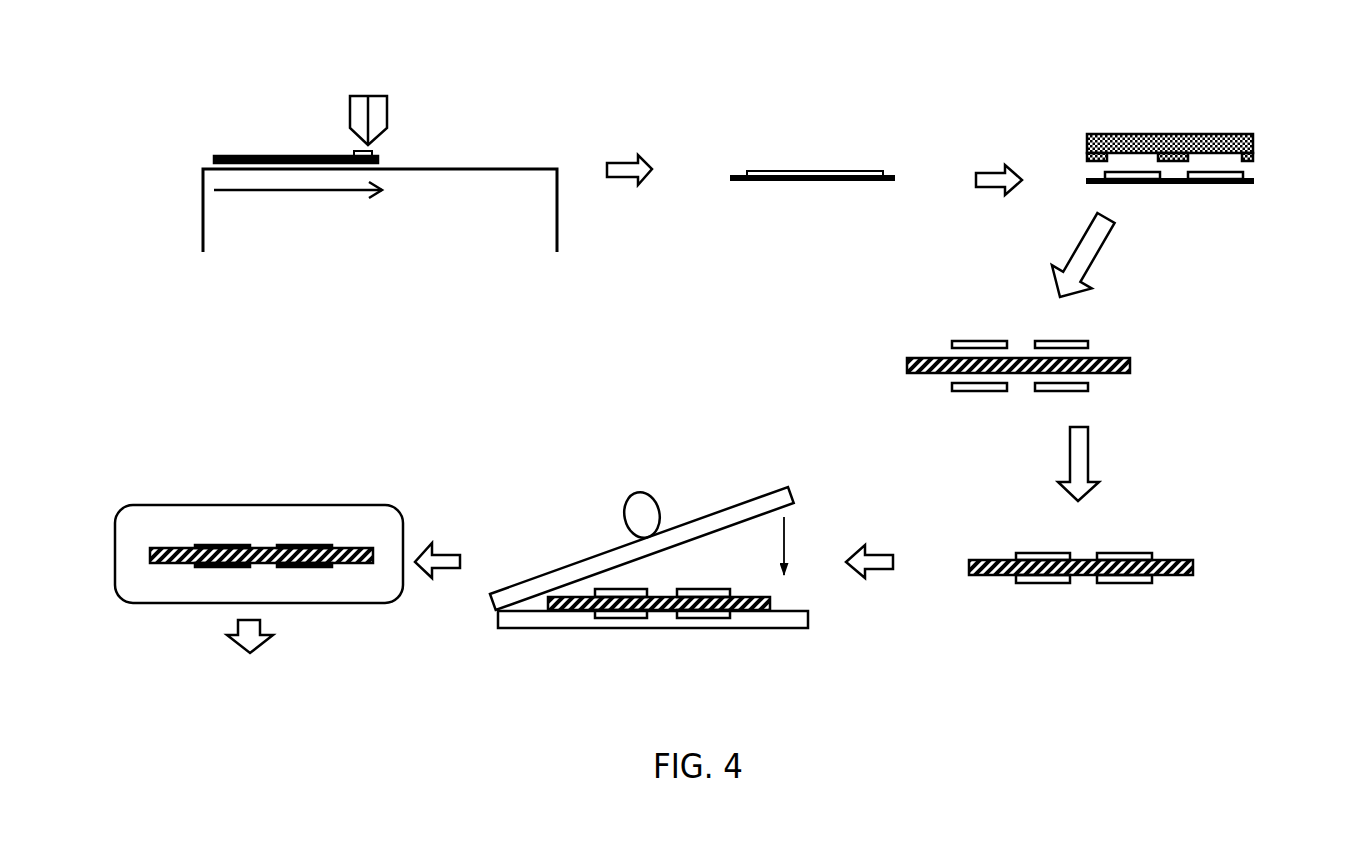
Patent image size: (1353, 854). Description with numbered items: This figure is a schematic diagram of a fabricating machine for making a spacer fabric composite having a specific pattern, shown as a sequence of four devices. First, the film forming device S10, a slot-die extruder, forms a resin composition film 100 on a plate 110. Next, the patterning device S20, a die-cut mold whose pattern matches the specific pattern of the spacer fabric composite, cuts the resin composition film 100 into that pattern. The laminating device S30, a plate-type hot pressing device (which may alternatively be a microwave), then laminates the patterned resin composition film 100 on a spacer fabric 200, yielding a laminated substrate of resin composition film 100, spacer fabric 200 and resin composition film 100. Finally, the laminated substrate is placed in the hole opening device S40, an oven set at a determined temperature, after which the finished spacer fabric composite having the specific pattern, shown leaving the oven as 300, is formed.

The resin composition film 100 is at (853, 169).
The plate 110 is at (730, 181).
The spacer fabric 200 is at (1136, 362).
The laminated product 300 is at (261, 623).
The film forming device S10 is at (432, 170).
The patterning device S20 is at (1152, 195).
The laminating device S30 is at (617, 535).
The hole opening device S40 is at (259, 536).